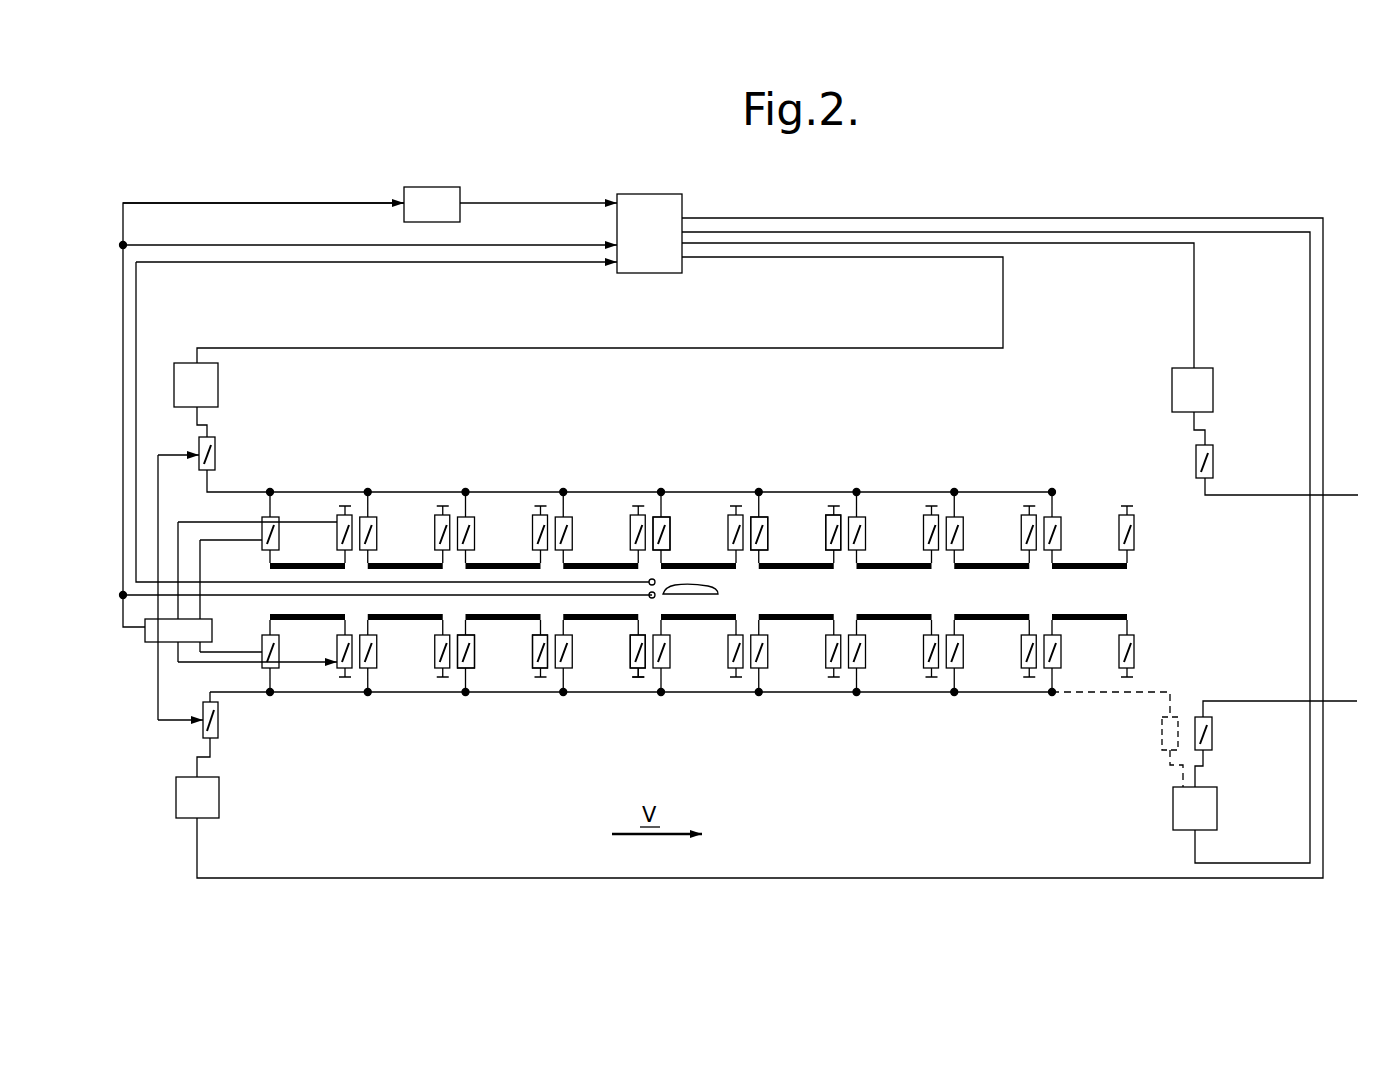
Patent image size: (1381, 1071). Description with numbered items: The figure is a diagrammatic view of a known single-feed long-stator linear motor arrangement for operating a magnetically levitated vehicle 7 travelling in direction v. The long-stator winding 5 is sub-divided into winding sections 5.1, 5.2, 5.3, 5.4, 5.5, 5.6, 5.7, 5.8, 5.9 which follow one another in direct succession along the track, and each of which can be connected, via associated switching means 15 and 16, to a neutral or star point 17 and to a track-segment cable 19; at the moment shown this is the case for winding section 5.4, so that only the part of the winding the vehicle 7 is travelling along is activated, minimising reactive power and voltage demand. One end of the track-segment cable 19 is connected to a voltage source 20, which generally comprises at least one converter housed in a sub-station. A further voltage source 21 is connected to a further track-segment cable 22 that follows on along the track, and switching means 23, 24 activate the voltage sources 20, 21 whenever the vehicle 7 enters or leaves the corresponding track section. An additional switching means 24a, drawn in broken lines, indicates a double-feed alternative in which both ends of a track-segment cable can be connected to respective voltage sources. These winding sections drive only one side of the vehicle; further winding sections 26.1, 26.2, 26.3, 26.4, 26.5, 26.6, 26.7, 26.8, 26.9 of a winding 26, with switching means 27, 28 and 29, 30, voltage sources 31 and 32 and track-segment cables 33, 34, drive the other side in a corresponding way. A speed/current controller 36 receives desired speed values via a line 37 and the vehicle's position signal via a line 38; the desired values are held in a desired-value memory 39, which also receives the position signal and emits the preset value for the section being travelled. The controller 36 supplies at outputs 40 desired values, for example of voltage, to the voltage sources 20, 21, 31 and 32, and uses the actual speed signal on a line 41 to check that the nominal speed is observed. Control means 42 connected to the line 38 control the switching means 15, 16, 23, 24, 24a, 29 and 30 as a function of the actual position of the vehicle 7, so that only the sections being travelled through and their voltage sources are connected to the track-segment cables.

The long-stator winding 5 is at (732, 650).
The winding section 5.1 is at (283, 622).
The winding section 5.2 is at (407, 622).
The winding section 5.3 is at (505, 622).
The winding section 5.4 is at (602, 622).
The winding section 5.5 is at (700, 622).
The winding section 5.6 is at (798, 622).
The winding section 5.7 is at (896, 622).
The winding section 5.8 is at (993, 622).
The winding section 5.9 is at (1091, 622).
The vehicle 7 is at (705, 586).
The switching means 15 is at (537, 670).
The switching means 16 is at (628, 668).
The neutral or star point 17 is at (638, 678).
The track-segment cable 19 is at (900, 694).
The voltage source 20 is at (219, 805).
The voltage source 21 is at (1217, 808).
The track-segment cable 22 is at (1340, 701).
The switching means 23 is at (218, 728).
The switching means 24 is at (1212, 735).
The additional switching means 24a is at (1160, 728).
The winding 26 is at (726, 539).
The winding section 26.1 is at (330, 546).
The winding section 26.2 is at (406, 563).
The winding section 26.3 is at (504, 563).
The winding section 26.4 is at (601, 563).
The winding section 26.5 is at (699, 563).
The winding section 26.6 is at (797, 563).
The winding section 26.7 is at (895, 563).
The winding section 26.8 is at (992, 563).
The winding section 26.9 is at (1090, 563).
The switching means 27 is at (755, 517).
The switching means 28 is at (822, 517).
The switching means 29 is at (215, 443).
The switching means 30 is at (1213, 462).
The voltage source 31 is at (218, 380).
The voltage source 32 is at (1213, 380).
The track-segment cable 33 is at (405, 492).
The track-segment cable 34 is at (1345, 495).
The speed/current controller 36 is at (652, 194).
The line 37 is at (537, 203).
The line 38 is at (123, 388).
The desired-value memory 39 is at (448, 187).
The outputs 40 is at (905, 257).
The line 41 is at (136, 323).
The control means 42 is at (157, 642).